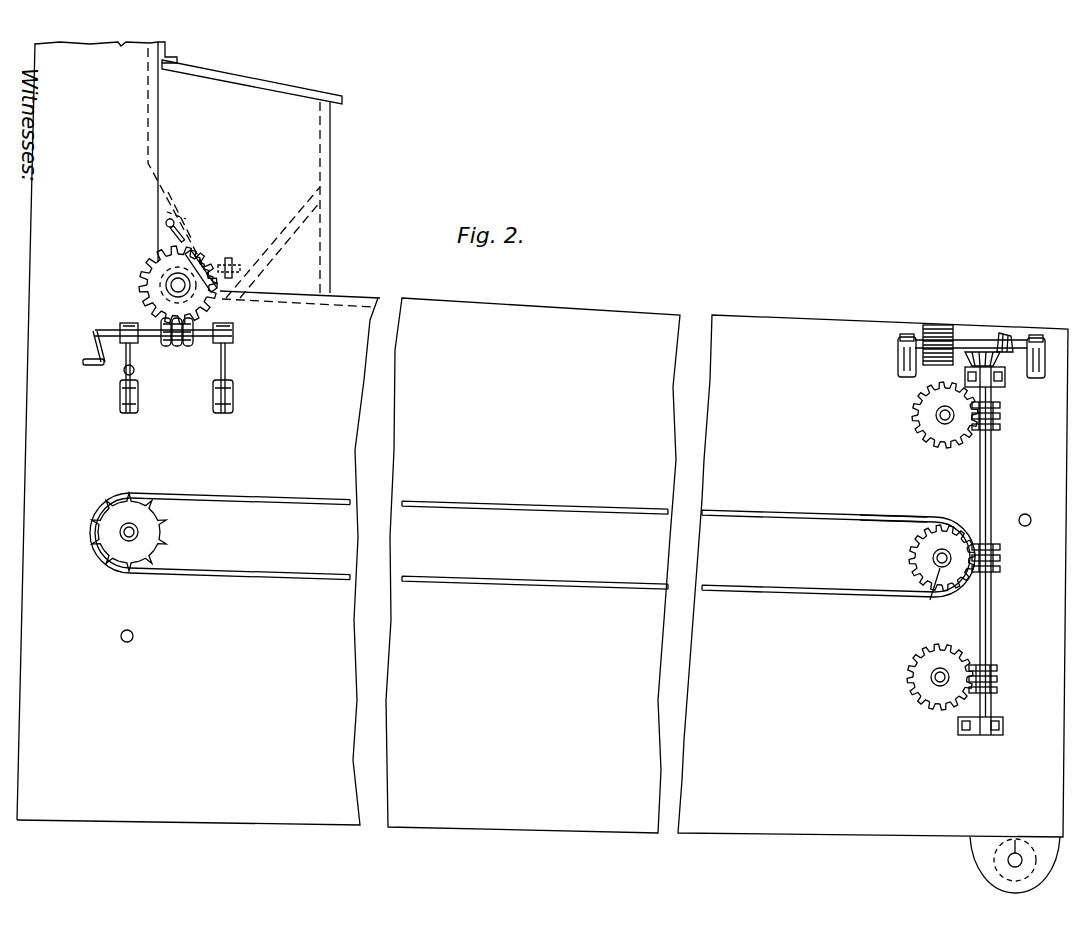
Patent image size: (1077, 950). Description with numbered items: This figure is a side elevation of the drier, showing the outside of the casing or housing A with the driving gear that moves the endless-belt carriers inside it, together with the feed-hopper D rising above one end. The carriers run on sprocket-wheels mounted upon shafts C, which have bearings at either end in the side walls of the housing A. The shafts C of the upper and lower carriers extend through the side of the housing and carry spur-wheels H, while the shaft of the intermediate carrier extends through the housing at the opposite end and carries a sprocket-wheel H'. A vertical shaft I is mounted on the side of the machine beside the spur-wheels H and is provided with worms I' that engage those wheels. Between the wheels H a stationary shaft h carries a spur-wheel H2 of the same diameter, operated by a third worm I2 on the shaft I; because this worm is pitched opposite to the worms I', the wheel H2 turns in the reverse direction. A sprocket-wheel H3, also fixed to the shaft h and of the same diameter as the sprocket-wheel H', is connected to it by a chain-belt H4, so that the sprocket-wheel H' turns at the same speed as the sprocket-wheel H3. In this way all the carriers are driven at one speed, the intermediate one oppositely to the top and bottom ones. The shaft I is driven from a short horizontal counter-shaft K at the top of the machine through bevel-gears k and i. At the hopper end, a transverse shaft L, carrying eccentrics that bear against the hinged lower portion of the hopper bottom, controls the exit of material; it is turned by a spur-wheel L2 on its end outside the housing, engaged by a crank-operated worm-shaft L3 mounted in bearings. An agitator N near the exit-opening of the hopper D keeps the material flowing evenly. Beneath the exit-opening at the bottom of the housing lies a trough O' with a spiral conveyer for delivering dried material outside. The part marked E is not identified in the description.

The outside casing or housing A is at (542, 564).
The end wall / upright E is at (109, 431).
The feed-hopper D is at (252, 179).
The agitator N is at (233, 262).
The transverse shaft L is at (143, 284).
The spur-wheel L2 is at (150, 300).
The worm-shaft L3 is at (175, 346).
The shafts C is at (135, 372).
The sprocket-wheel H' is at (128, 532).
The spur-wheel H2 is at (940, 556).
The sprocket-wheel H3 is at (926, 517).
The chain-belt H4 is at (532, 539).
The stationary shaft h is at (932, 595).
The spur-wheels H is at (942, 555).
The vertical shaft I is at (994, 551).
The bevel-gear i is at (1000, 360).
The worms I' is at (995, 547).
The worm I2 is at (1000, 566).
The horizontal counter-shaft K is at (970, 340).
The bevel-gear k is at (1011, 336).
The trough O' is at (1021, 865).